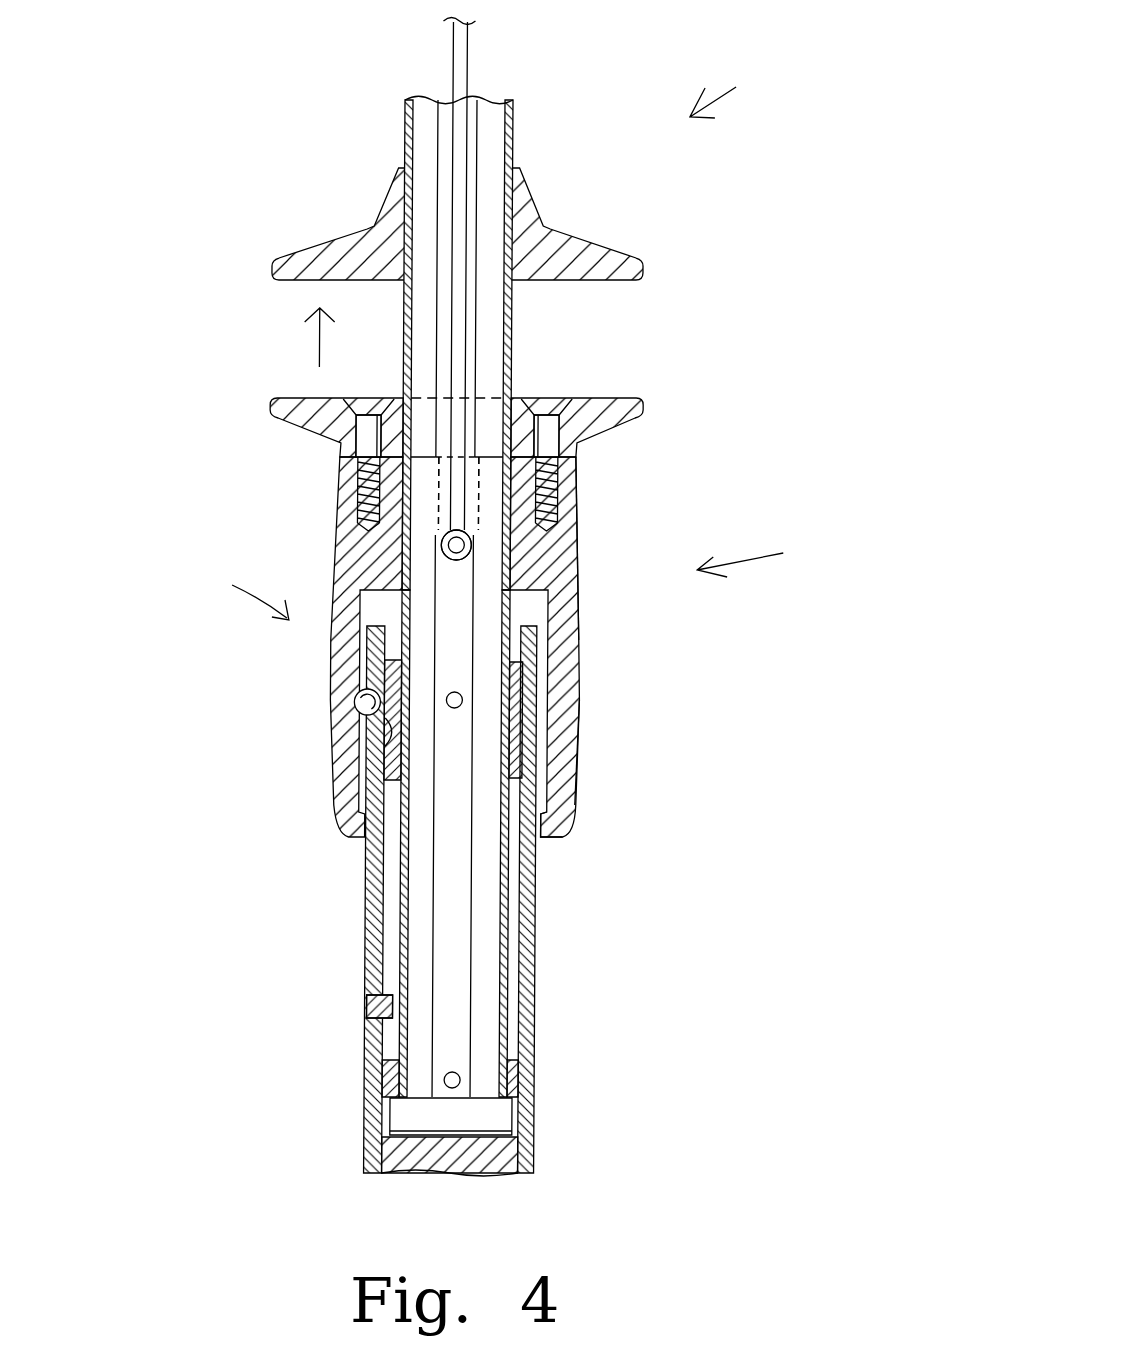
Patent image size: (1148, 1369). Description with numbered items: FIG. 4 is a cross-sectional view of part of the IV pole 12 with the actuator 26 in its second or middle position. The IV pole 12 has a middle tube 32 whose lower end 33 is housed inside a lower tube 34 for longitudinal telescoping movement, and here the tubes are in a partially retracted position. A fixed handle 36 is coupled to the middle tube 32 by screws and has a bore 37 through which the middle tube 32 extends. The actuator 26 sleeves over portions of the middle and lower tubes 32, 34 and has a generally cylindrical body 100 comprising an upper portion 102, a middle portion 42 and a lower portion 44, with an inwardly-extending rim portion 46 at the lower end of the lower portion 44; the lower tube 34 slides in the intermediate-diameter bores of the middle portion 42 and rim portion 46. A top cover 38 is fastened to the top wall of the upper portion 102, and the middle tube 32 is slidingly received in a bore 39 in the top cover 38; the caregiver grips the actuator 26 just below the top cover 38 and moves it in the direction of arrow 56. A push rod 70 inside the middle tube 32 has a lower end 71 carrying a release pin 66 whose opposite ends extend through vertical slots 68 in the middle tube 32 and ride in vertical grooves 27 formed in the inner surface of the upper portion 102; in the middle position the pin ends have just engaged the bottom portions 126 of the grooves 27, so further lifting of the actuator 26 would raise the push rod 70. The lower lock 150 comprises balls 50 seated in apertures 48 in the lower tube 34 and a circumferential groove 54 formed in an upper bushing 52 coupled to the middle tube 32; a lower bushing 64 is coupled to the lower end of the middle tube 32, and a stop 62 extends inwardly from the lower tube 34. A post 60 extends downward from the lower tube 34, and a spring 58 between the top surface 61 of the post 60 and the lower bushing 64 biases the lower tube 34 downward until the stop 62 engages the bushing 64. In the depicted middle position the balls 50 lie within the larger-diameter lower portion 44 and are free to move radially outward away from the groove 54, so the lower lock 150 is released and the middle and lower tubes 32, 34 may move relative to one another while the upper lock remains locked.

The push rod 70 is at (462, 53).
The middle tube 32 is at (513, 128).
The bore 37 is at (510, 225).
The fixed handle 36 is at (608, 250).
The IV pole 12 is at (748, 87).
The arrow 56 is at (318, 345).
The bore 39 is at (507, 433).
The top cover 38 is at (645, 403).
The vertical grooves 27 is at (577, 443).
The lower end of push rod 71 is at (457, 495).
The vertical slots 68 is at (480, 507).
The body 100 is at (336, 500).
The upper portion 102 is at (578, 528).
The bottom portions 126 is at (457, 547).
The release pin 66 is at (467, 550).
The actuator 26 is at (771, 555).
The lower lock 150 is at (211, 599).
The middle portion 42 is at (577, 635).
The lower portion 44 is at (580, 763).
The upper bushing 52 is at (530, 683).
The circumferential groove 54 is at (517, 743).
The ball 50 is at (358, 698).
The apertures 48 is at (380, 722).
The rim portion 46 is at (556, 832).
The lower end of middle tube 33 is at (405, 855).
The lower tube 34 is at (537, 967).
The stop 62 is at (375, 1003).
The lower bushing 64 is at (390, 1078).
The spring 58 is at (488, 1117).
The top surface 61 is at (420, 1124).
The post 60 is at (473, 1157).